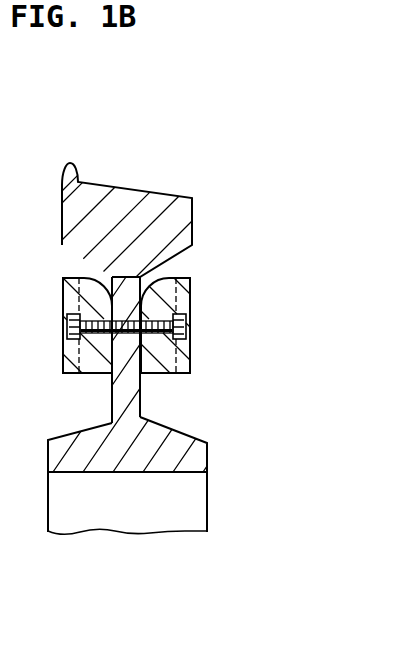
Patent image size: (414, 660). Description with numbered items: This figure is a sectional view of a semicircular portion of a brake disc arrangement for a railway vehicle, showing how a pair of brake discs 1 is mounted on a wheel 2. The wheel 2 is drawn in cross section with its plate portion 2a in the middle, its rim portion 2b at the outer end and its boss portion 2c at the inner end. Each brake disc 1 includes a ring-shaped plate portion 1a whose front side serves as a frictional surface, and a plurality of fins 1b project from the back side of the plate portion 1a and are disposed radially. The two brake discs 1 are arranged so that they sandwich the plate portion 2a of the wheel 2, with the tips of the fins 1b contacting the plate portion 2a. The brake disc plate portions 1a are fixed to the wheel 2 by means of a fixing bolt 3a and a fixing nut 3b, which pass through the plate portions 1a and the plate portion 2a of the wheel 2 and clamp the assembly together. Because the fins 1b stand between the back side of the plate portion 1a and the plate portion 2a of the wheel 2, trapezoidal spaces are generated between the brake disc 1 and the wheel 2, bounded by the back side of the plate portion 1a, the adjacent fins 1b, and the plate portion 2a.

The brake disc 1 is at (129, 309).
The plate portion 1a is at (72, 302).
The fin 1b is at (96, 292).
The wheel 2 is at (139, 352).
The plate portion 2a is at (126, 393).
The rim portion 2b is at (125, 218).
The boss portion 2c is at (125, 447).
The fixing bolt 3a is at (65, 327).
The fixing nut 3b is at (192, 327).